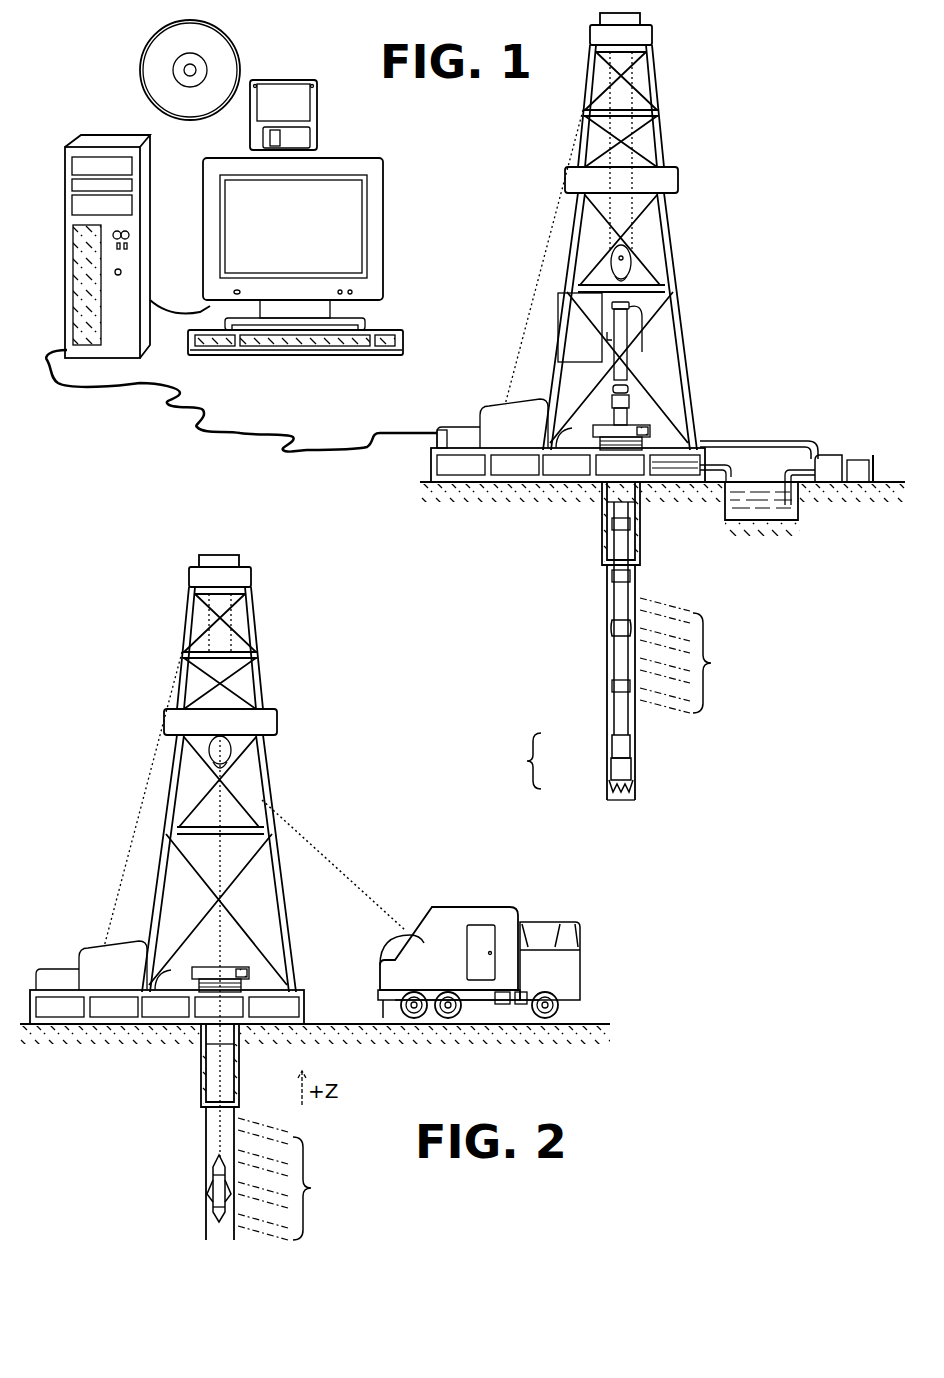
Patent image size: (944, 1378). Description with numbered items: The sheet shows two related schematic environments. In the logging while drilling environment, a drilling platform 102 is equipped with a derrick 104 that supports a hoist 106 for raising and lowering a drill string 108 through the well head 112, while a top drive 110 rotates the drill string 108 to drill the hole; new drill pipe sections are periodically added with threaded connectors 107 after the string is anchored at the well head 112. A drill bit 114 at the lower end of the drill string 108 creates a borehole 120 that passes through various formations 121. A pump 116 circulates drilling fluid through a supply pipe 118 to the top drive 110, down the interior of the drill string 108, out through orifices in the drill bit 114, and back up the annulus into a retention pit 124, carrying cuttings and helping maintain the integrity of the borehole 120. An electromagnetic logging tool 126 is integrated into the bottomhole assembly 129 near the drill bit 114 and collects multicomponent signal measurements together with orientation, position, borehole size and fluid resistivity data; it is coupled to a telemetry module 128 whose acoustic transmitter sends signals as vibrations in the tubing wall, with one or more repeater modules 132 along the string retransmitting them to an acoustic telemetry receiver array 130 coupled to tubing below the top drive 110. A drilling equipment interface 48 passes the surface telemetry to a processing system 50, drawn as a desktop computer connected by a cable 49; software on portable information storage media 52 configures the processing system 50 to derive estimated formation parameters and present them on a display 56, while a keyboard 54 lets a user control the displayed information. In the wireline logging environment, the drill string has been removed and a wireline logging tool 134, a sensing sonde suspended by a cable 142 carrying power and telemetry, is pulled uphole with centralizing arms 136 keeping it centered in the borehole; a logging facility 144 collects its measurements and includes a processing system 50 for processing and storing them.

In FIG. 1, the drilling equipment interface 48 is at (439, 428).
In FIG. 1, the cable 49 is at (197, 428).
In FIG. 1, the processing system 50 is at (150, 281).
In FIG. 1, the portable information storage media 52 is at (240, 68).
In FIG. 1, the keyboard 54 is at (375, 355).
In FIG. 1, the display 56 is at (370, 300).
In FIG. 1, the drilling platform 102 is at (431, 458).
In FIG. 2, the drilling platform 102 is at (315, 876).
In FIG. 1, the derrick 104 is at (660, 135).
In FIG. 2, the derrick 104 is at (226, 856).
In FIG. 1, the hoist 106 is at (630, 258).
In FIG. 2, the hoist 106 is at (271, 758).
In FIG. 1, the threaded connectors 107 is at (612, 574).
In FIG. 1, the drill string 108 is at (625, 608).
In FIG. 1, the top drive 110 is at (620, 320).
In FIG. 1, the well head 112 is at (636, 423).
In FIG. 2, the well head 112 is at (270, 946).
In FIG. 1, the drill bit 114 is at (628, 790).
In FIG. 1, the pump 116 is at (820, 458).
In FIG. 1, the supply pipe 118 is at (770, 441).
In FIG. 1, the borehole 120 is at (608, 626).
In FIG. 1, the formations 121 is at (699, 655).
In FIG. 2, the formations 121 is at (298, 1179).
In FIG. 1, the retention pit 124 is at (738, 508).
In FIG. 1, the electromagnetic logging tool 126 is at (611, 768).
In FIG. 1, the telemetry module 128 is at (612, 745).
In FIG. 1, the bottomhole assembly 129 is at (518, 761).
In FIG. 1, the acoustic telemetry receiver array 130 is at (628, 390).
In FIG. 1, the repeater modules 132 is at (612, 640).
In FIG. 2, the wireline logging tool 134 is at (213, 1178).
In FIG. 2, the centralizing arms 136 is at (207, 1196).
In FIG. 2, the cable 142 is at (290, 825).
In FIG. 2, the logging facility 144 is at (445, 906).